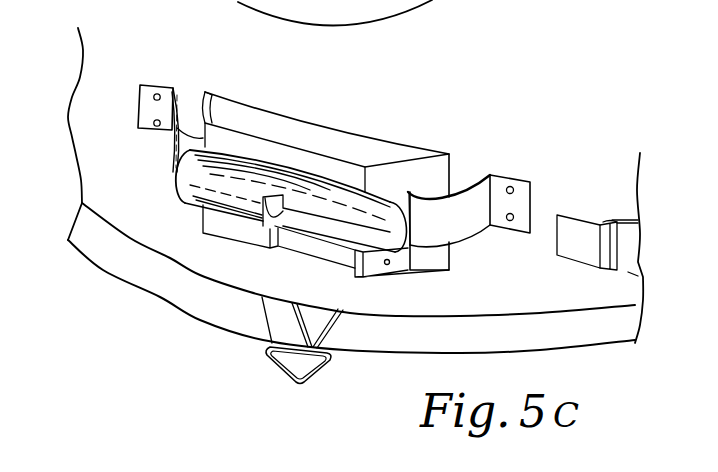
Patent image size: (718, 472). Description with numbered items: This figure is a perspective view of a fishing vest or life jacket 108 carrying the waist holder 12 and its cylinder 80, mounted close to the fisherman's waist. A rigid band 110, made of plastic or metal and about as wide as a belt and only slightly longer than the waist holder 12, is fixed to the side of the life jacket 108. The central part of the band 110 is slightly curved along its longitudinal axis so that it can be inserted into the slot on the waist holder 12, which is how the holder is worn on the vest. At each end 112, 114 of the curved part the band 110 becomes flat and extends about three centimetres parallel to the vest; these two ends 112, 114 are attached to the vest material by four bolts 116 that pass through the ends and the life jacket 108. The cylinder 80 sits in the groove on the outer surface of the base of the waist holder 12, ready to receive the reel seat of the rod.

The waist holder 12 is at (326, 161).
The cylinder 80 is at (259, 201).
The life jacket 108 is at (338, 293).
The band 110 is at (473, 240).
The end of the band 112 is at (160, 93).
The end of the band 114 is at (513, 158).
The bolts 116 is at (320, 152).